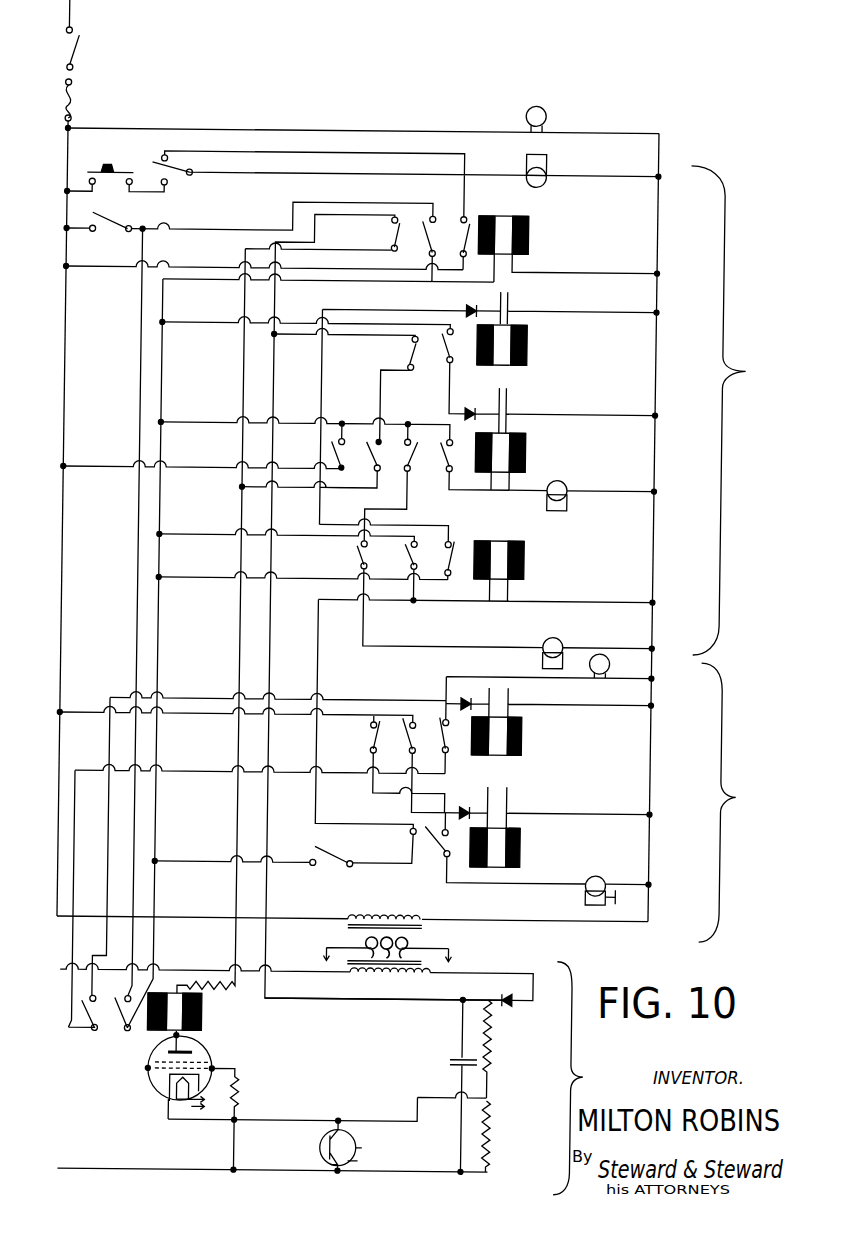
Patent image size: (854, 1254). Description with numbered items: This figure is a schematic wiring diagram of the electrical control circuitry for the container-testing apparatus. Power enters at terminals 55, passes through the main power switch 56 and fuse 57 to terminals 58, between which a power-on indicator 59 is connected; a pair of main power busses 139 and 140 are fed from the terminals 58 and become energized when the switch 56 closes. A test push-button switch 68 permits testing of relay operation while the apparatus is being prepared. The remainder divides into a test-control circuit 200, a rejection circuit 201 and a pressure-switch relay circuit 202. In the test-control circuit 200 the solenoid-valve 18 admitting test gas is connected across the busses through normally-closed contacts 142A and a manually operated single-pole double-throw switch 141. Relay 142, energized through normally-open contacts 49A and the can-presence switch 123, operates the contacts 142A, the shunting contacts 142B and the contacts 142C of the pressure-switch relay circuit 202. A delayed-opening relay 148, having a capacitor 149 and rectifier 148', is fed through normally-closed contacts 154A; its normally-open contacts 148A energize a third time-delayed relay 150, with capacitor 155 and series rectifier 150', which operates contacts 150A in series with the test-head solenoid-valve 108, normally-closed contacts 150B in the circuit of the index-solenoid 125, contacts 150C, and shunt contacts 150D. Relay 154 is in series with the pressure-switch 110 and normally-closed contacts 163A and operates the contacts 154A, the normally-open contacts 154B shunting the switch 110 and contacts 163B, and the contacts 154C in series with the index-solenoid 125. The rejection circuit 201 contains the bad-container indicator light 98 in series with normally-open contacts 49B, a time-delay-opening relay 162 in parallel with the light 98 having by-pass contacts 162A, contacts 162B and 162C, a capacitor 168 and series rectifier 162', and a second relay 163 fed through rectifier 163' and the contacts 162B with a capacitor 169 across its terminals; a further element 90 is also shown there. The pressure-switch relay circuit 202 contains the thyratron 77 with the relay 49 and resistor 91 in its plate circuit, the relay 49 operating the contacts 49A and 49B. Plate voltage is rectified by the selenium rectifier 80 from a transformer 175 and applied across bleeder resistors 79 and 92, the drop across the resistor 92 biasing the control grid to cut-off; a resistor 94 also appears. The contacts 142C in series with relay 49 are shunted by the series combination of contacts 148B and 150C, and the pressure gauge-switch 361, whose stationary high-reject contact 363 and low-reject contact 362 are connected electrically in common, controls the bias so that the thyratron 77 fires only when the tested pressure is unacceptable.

The terminals 55 is at (65, 31).
The main power switch 56 is at (77, 42).
The fuse 57 is at (74, 94).
The terminals 58 is at (66, 128).
The power-on indicator 59 is at (543, 104).
The solenoid-valve 18 is at (548, 158).
The test push-button switch 68 is at (109, 164).
The single pole double throw switch 141 is at (176, 176).
The can-presence switch 123 is at (122, 224).
The main power bus 139 is at (68, 396).
The main power bus 140 is at (660, 395).
The relay 142 is at (527, 229).
The normally-closed contacts 142A is at (462, 240).
The contacts 142B is at (430, 226).
The contacts 142C is at (393, 231).
The delayed opening relay 148 is at (521, 344).
The rectifier 148' is at (409, 406).
The capacitor 149 is at (509, 302).
The normally-open contacts 148A is at (456, 355).
The contacts 148B is at (412, 365).
The relay 150 is at (517, 459).
The rectifier 150' is at (473, 405).
The capacitor 155 is at (511, 397).
The normally-open contacts 150A is at (352, 453).
The normally-closed contacts 150B is at (399, 481).
The contacts 150C is at (319, 464).
The shunt contacts 150D is at (214, 444).
The solenoid-valve 108 is at (559, 478).
The relay 154 is at (529, 556).
The normally-closed contacts 154A is at (305, 559).
The normally-open contacts 154B is at (286, 564).
The normally-open contacts 154C is at (364, 549).
The index-solenoid 125 is at (561, 633).
The bad container indicator light 98 is at (613, 664).
The time-delay-opening relay 162 is at (520, 735).
The rectifier 162' is at (465, 695).
The capacitor 168 is at (517, 696).
The by-pass normally-open contacts 162A is at (262, 732).
The normally-open contacts 162B is at (418, 765).
The relay contact 162C is at (375, 737).
The relay 163 is at (521, 845).
The rectifier 163' is at (466, 804).
The capacitor 169 is at (517, 798).
The normally-closed contacts 163A is at (499, 852).
The contacts 163B is at (418, 838).
The pressure-switch 110 is at (333, 850).
The solenoid 90 is at (598, 873).
The transformer 175 is at (430, 937).
The selenium rectifier 80 is at (522, 1002).
The bleeder resistor 79 is at (502, 1040).
The bleeder resistor 92 is at (504, 1163).
The resistor 91 is at (228, 990).
The relay 49 is at (212, 1016).
The normally-open contacts 49A is at (130, 1030).
The normally-open contacts 49B is at (92, 1032).
The thyratron 77 is at (212, 1046).
The resistor 94 is at (250, 1100).
The high-reject stationary contact 363 is at (334, 1144).
The low-reject stationary contact 362 is at (370, 1145).
The pressure gauge-switch 361 is at (364, 1158).
The test-control circuit 200 is at (780, 375).
The rejection circuit 201 is at (778, 803).
The pressure-switch relay circuit 202 is at (612, 1084).